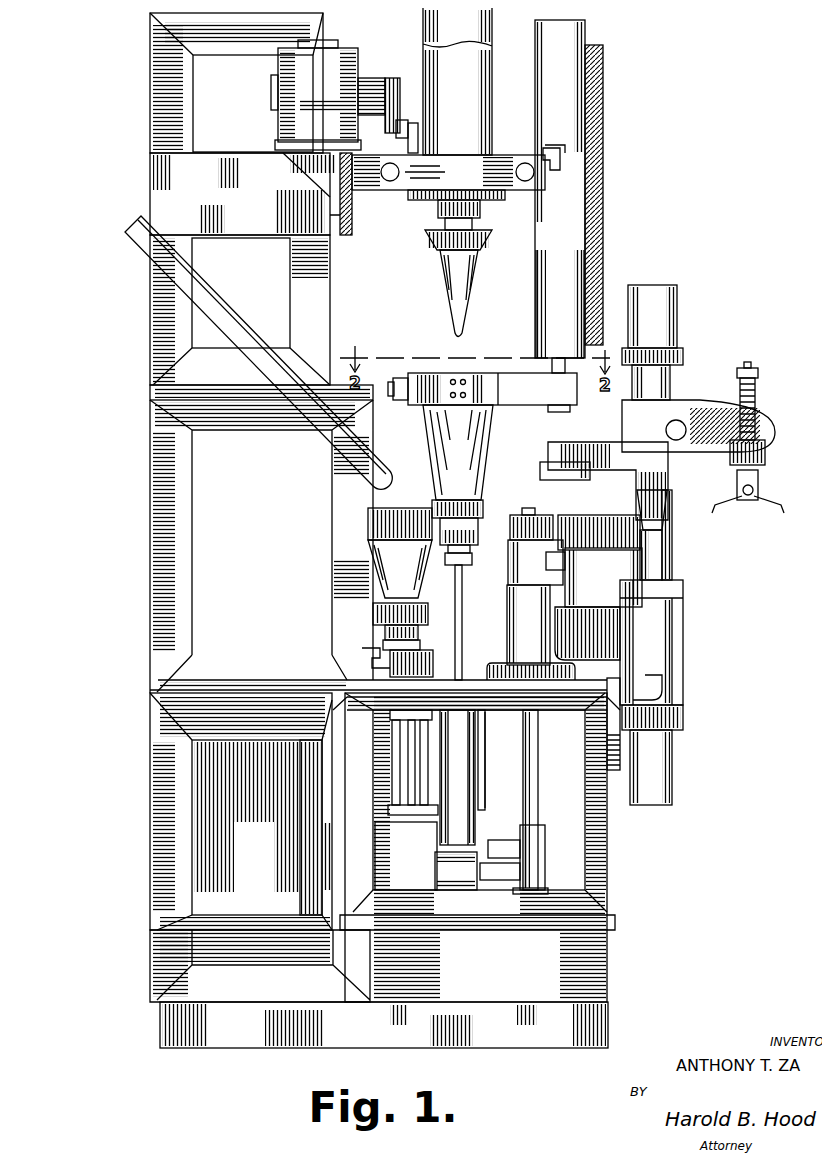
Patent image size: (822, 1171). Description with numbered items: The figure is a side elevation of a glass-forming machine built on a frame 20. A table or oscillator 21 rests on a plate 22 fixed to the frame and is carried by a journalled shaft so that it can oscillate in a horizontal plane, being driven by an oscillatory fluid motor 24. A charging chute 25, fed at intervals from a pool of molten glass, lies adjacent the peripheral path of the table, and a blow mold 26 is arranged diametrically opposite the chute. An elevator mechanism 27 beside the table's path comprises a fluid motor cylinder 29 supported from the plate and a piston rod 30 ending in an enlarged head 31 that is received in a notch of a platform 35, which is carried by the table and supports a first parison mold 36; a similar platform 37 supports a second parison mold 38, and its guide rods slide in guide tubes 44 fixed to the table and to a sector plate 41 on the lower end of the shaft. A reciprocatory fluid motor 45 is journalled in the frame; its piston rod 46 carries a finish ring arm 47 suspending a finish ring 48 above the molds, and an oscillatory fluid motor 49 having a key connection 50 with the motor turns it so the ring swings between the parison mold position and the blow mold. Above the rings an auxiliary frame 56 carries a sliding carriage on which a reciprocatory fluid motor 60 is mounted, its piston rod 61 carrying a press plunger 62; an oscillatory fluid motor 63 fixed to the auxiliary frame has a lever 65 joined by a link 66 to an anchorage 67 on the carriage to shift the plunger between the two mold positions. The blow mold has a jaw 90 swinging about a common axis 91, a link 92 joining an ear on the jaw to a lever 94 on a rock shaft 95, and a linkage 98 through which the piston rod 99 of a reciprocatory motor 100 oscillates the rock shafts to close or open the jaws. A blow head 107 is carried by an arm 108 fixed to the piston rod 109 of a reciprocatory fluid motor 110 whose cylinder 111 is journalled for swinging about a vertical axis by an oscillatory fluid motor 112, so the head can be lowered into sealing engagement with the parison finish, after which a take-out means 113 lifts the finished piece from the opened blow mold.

The frame 20 is at (160, 735).
The table or oscillator 21 is at (372, 668).
The plate 22 is at (340, 662).
The oscillatory fluid motor 24 is at (485, 728).
The charging chute 25 is at (311, 418).
The blow mold 26 is at (608, 518).
The elevator mechanism 27 is at (498, 827).
The fluid motor cylinder 29 is at (462, 777).
The piston rod 30 is at (463, 612).
The enlarged head 31 is at (470, 559).
The platform 35 is at (473, 541).
The first parison mold 36 is at (434, 440).
The platform 37 is at (411, 660).
The second parison mold 38 is at (370, 536).
The sector plate 41 is at (413, 812).
The guide tubes 44 is at (420, 770).
The reciprocatory fluid motor 45 is at (545, 272).
The piston rod 46 is at (551, 365).
The finish ring arm 47 is at (513, 400).
The finish ring 48 is at (443, 363).
The oscillatory fluid motor 49 is at (586, 40).
The key connection 50 is at (552, 152).
The auxiliary frame 56 is at (448, 172).
The reciprocatory fluid motor 60 is at (466, 76).
The piston rod 61 is at (446, 211).
The press plunger 62 is at (449, 284).
The oscillatory fluid motor 63 is at (340, 70).
The lever 65 is at (395, 95).
The link 66 is at (402, 123).
The anchorage 67 is at (416, 137).
The jaw 90 is at (603, 577).
The common axis 91 is at (528, 512).
The link 92 is at (556, 560).
The lever 94 is at (551, 598).
The rock shaft 95 is at (537, 740).
The linkage 98 is at (522, 828).
The piston rod 99 is at (493, 880).
The reciprocatory motor 100 is at (455, 870).
The blow head 107 is at (542, 470).
The arm 108 is at (600, 445).
The piston rod 109 is at (655, 566).
The reciprocatory fluid motor 110 is at (704, 594).
The cylinder 111 is at (665, 638).
The oscillatory fluid motor 112 is at (672, 765).
The take-out means 113 is at (713, 374).